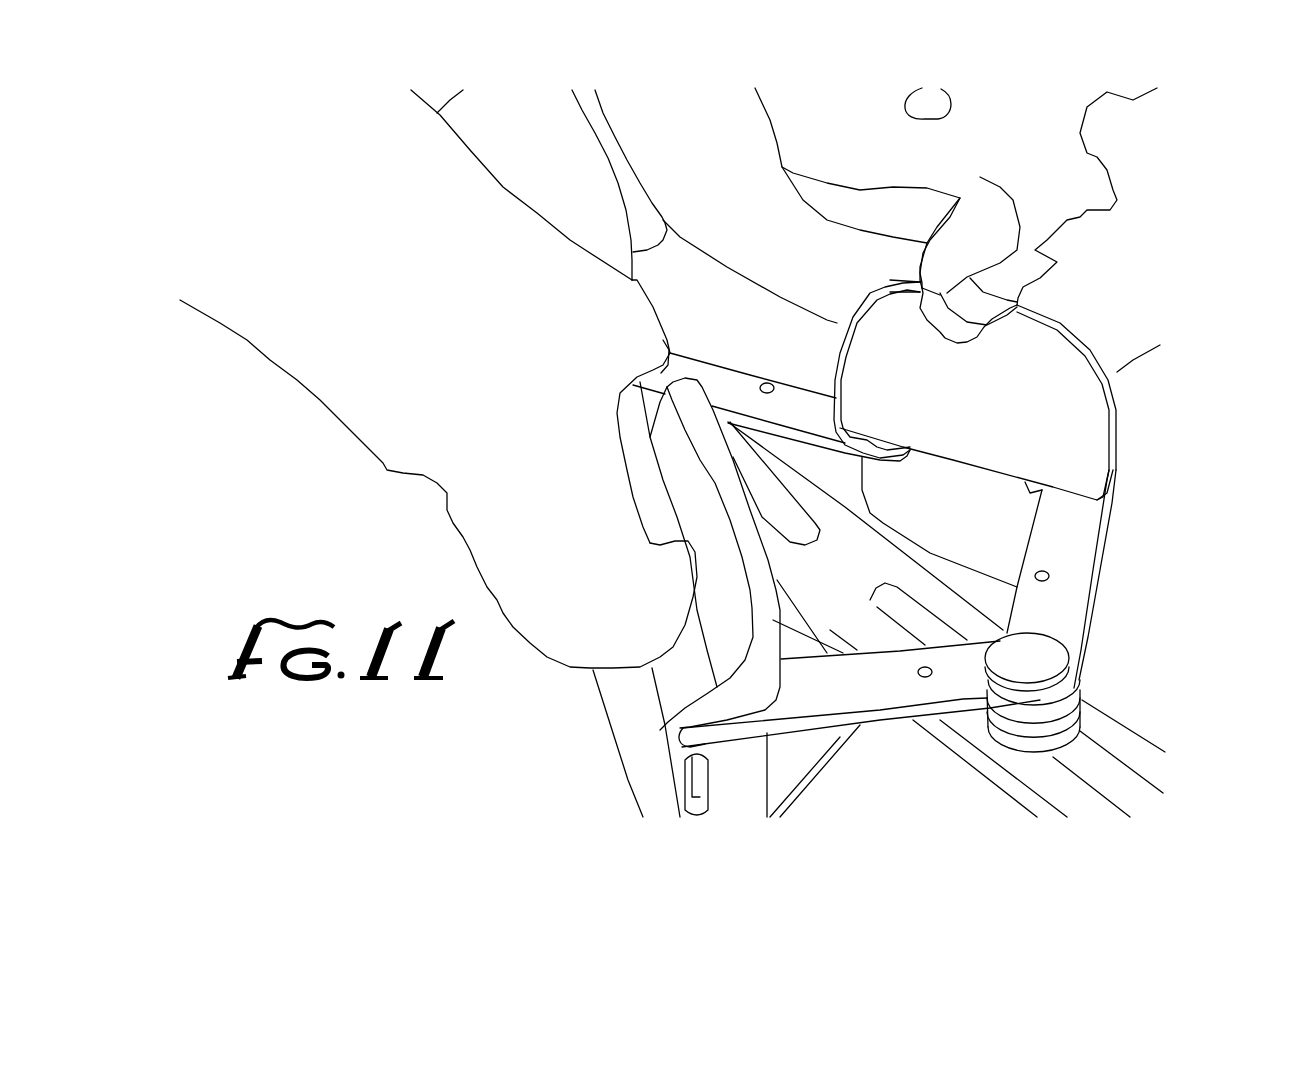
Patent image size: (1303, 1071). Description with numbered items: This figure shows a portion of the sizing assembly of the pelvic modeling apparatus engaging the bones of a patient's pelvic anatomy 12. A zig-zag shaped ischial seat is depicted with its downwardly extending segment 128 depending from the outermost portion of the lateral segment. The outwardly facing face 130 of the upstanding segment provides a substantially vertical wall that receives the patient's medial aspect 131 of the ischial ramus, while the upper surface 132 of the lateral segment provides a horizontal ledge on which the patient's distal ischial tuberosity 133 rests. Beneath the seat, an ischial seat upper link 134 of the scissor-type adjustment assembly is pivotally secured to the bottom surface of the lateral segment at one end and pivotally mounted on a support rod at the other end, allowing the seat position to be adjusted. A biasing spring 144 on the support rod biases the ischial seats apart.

The pelvic anatomy 12 is at (403, 430).
The downwardly extending segment 128 is at (1070, 403).
The outwardly facing face 130 is at (687, 485).
The medial aspect of the ischial ramus 131 is at (688, 557).
The upper surface 132 is at (680, 682).
The distal ischial tuberosity 133 is at (618, 672).
The ischial seat upper link 134 is at (1083, 523).
The biasing spring 144 is at (1080, 717).